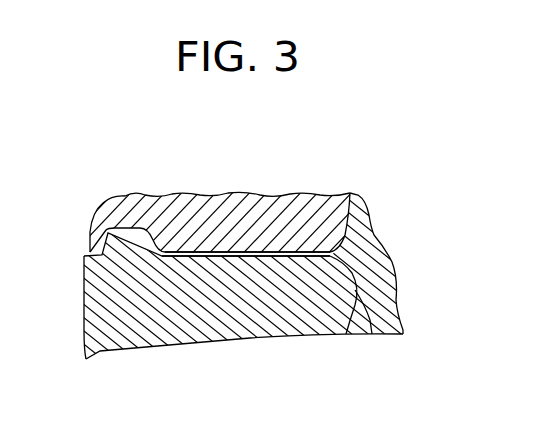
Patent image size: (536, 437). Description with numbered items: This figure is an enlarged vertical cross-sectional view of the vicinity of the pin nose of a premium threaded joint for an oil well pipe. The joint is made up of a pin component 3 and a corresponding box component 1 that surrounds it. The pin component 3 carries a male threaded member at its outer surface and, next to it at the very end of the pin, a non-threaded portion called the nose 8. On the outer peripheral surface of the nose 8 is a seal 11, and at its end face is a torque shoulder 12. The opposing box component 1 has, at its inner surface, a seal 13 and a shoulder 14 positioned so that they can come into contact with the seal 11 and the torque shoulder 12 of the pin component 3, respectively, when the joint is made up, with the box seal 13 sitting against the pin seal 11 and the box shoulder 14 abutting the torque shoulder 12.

The box component 1 is at (232, 206).
The pin component 3 is at (147, 350).
The nose 8 is at (241, 312).
The seal 11 is at (340, 258).
The torque shoulder 12 is at (350, 273).
The seal 13 is at (350, 192).
The shoulder 14 is at (362, 290).